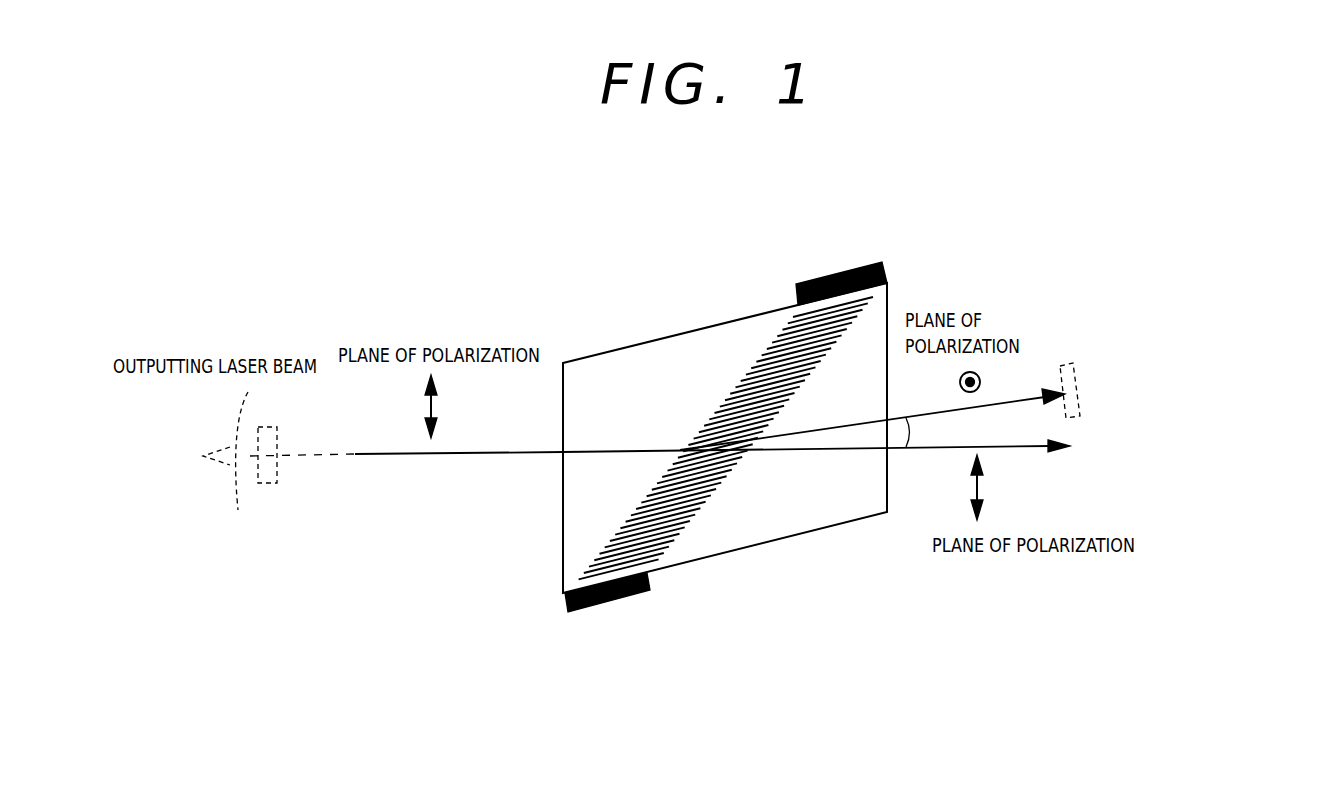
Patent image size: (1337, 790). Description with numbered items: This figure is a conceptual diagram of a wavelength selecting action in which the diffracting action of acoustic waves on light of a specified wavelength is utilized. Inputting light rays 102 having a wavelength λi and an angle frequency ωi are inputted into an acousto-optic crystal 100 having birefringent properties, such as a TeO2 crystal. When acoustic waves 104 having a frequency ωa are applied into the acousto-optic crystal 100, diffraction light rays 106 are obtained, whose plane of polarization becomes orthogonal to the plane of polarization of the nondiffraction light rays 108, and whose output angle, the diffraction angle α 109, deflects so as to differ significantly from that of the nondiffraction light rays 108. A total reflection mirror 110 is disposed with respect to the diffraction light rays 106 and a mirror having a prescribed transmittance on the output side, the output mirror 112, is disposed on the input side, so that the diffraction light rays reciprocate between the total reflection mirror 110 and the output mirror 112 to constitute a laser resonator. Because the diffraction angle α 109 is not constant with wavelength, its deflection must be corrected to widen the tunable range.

The acousto-optic crystal 100 is at (803, 497).
The inputting light rays 102 is at (440, 452).
The acoustic waves 104 is at (797, 317).
The diffraction light rays 106 is at (1003, 400).
The nondiffraction light rays 108 is at (1180, 590).
The diffraction angle α 109 is at (912, 432).
The total reflection mirror 110 is at (1080, 415).
The output mirror 112 is at (210, 469).